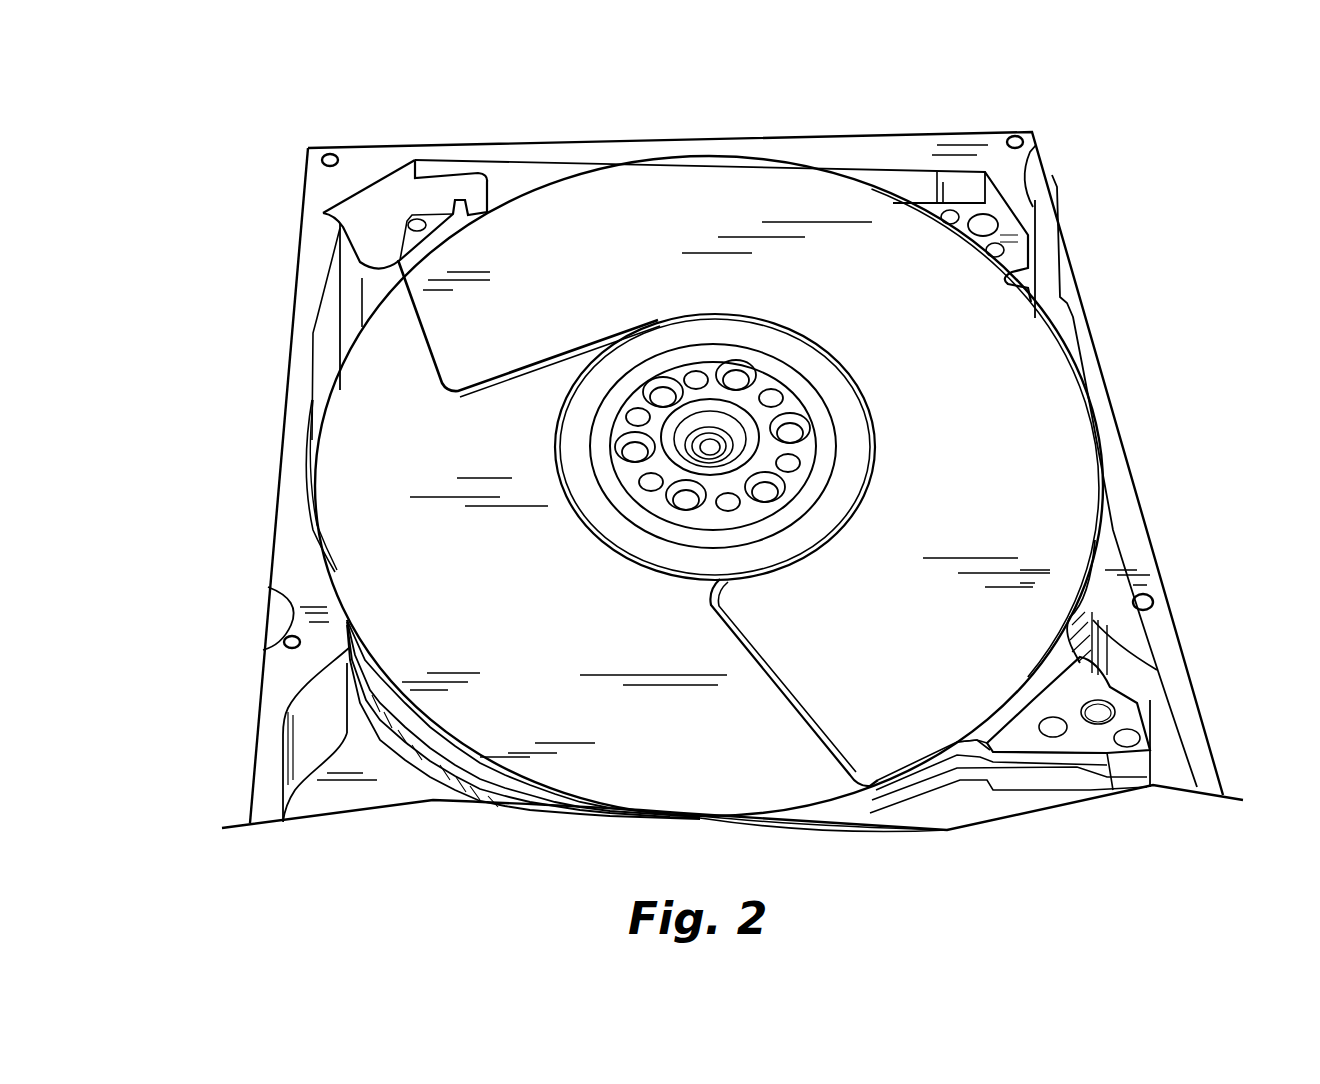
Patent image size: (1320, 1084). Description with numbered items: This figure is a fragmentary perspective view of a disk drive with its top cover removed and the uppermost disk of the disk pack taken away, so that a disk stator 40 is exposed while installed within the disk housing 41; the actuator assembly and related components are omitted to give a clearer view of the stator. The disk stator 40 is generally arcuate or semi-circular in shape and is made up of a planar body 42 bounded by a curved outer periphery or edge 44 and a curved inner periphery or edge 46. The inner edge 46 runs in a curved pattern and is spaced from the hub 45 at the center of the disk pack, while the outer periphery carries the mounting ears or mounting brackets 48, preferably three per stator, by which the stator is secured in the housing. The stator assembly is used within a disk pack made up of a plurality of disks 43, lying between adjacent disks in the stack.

The disk stator 40 is at (414, 406).
The disk housing 41 is at (1085, 350).
The planar body 42 is at (970, 408).
The disks 43 is at (542, 696).
The curved outer periphery or edge 44 is at (650, 170).
The hub 45 is at (640, 508).
The curved inner periphery or edge 46 is at (587, 346).
The mounting ears or mounting brackets 48 is at (430, 198).